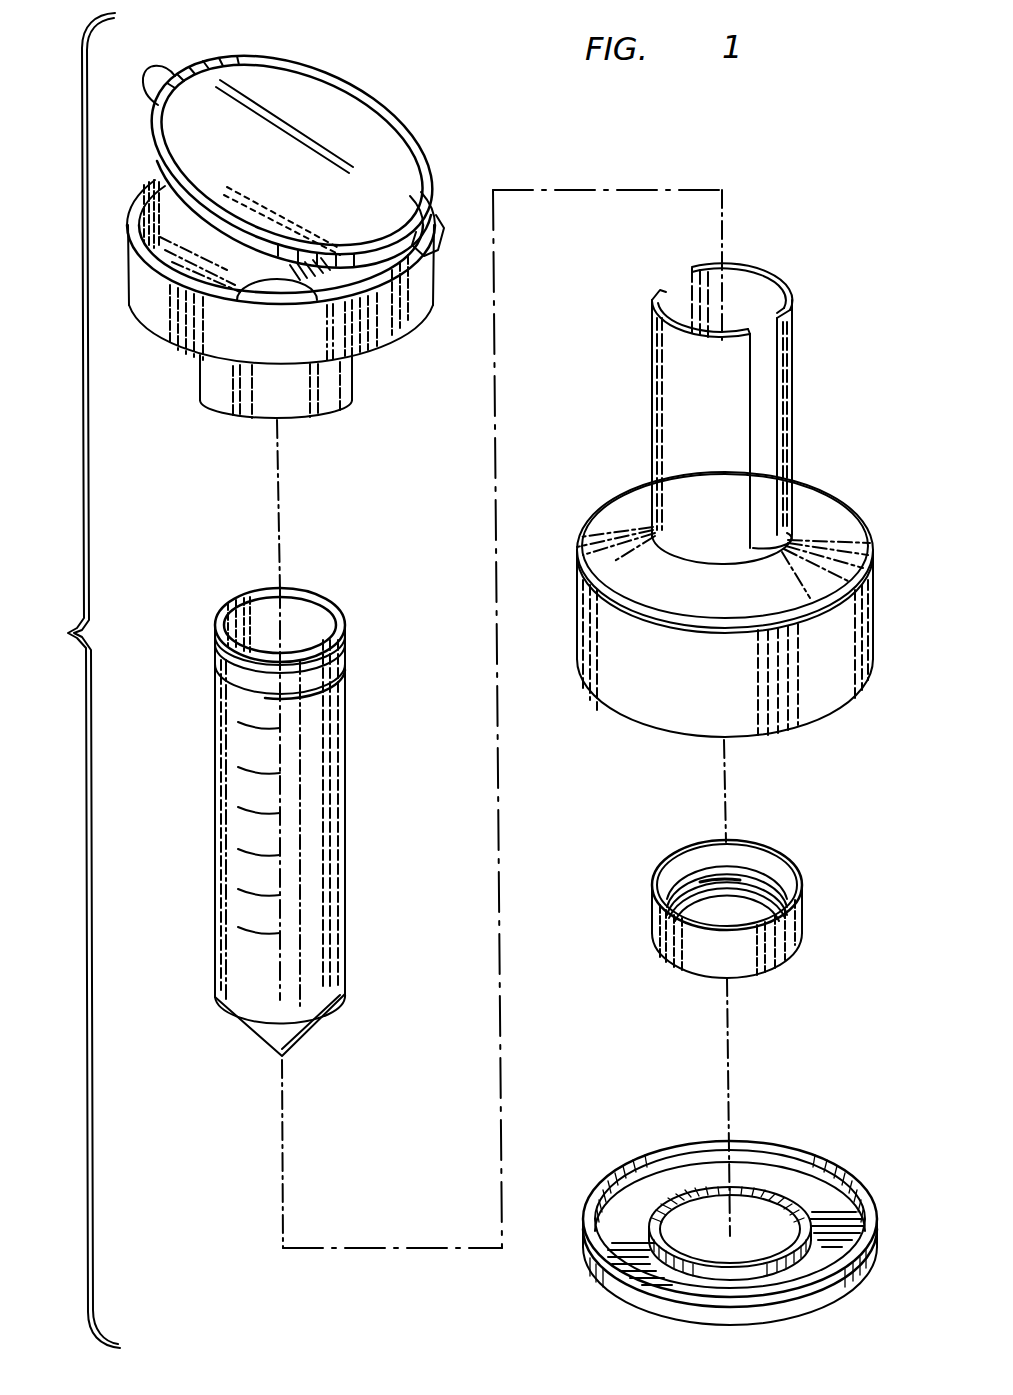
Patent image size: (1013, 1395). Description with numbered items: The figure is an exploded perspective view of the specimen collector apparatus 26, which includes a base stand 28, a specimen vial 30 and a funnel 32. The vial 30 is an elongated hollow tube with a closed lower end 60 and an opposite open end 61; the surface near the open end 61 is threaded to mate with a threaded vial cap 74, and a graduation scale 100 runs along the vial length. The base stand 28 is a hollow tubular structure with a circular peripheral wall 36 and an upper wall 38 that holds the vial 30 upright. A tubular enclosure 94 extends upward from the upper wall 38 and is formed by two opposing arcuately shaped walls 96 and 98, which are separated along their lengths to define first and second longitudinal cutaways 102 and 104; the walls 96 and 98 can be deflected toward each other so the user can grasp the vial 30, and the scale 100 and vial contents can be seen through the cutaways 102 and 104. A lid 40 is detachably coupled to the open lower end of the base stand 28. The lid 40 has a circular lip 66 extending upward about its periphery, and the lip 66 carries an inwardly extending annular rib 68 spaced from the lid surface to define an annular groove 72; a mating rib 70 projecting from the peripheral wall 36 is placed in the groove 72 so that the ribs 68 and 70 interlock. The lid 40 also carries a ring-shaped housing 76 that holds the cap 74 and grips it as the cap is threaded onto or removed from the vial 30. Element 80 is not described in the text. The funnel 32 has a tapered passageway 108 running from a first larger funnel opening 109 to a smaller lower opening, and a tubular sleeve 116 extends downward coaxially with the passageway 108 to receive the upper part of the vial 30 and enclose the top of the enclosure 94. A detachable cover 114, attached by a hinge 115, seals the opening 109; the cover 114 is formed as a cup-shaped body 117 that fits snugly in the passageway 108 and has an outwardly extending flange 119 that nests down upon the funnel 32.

The apparatus 26 is at (69, 680).
The base stand 28 is at (725, 496).
The specimen vial 30 is at (274, 818).
The funnel 32 is at (298, 227).
The circular peripheral wall 36 is at (630, 683).
The upper wall 38 is at (827, 523).
The lid 40 is at (745, 1194).
The closed lower end 60 is at (307, 1030).
The open end 61 is at (322, 600).
The circular lip 66 is at (877, 1220).
The annular rib 68 is at (785, 1160).
The mating rib 70 is at (780, 730).
The annular groove 72 is at (623, 1203).
The vial cap 74 is at (800, 927).
The housing 76 is at (685, 1177).
The threads on tube 80 is at (343, 655).
The tubular enclosure 94 is at (739, 391).
The arcuately shaped wall 96 is at (788, 298).
The arcuately shaped wall 98 is at (677, 375).
The graduation scale 100 is at (247, 810).
The first longitudinal cutaway 102 is at (665, 290).
The second longitudinal cutaway 104 is at (770, 378).
The tapered passageway 108 is at (178, 255).
The first larger funnel opening 109 is at (265, 260).
The detachable cover 114 is at (311, 151).
The hinge 115 is at (420, 202).
The tubular sleeve 116 is at (332, 372).
The cup-shaped body 117 is at (268, 140).
The outwardly extending flange 119 is at (392, 130).